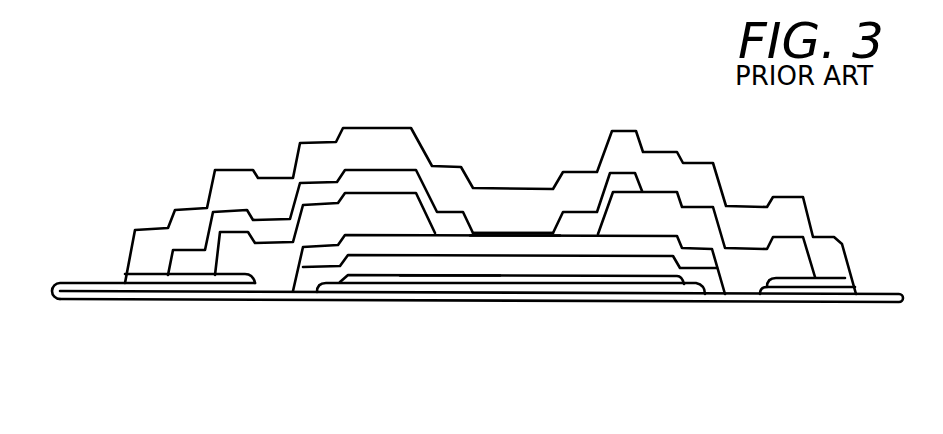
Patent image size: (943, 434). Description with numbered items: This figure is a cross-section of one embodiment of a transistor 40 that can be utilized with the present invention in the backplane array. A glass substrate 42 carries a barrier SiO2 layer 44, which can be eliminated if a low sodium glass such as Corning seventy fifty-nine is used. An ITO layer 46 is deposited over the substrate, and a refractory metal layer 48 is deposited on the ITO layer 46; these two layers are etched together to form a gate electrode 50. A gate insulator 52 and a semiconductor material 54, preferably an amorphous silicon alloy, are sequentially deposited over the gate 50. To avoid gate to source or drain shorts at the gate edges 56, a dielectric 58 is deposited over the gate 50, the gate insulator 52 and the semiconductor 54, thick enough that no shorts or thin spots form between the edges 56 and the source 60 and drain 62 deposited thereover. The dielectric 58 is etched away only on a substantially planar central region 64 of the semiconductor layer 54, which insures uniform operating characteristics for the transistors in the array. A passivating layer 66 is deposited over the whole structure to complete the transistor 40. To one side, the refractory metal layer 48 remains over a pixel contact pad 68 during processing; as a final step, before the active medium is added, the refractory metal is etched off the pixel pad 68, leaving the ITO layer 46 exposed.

The transistor 40 is at (724, 150).
The glass substrate 42 is at (497, 391).
The barrier SiO2 layer 44 is at (760, 296).
The ITO layer 46 is at (114, 291).
The refractory metal layer 48 is at (192, 280).
The gate electrode 50 is at (447, 286).
The gate insulator 52 is at (550, 263).
The semiconductor material 54 is at (512, 246).
The gate edges 56 is at (303, 292).
The dielectric 58 is at (354, 224).
The source 60 is at (568, 223).
The drain 62 is at (367, 182).
The planar central region 64 is at (483, 228).
The passivating layer 66 is at (491, 224).
The pixel contact pad 68 is at (77, 283).